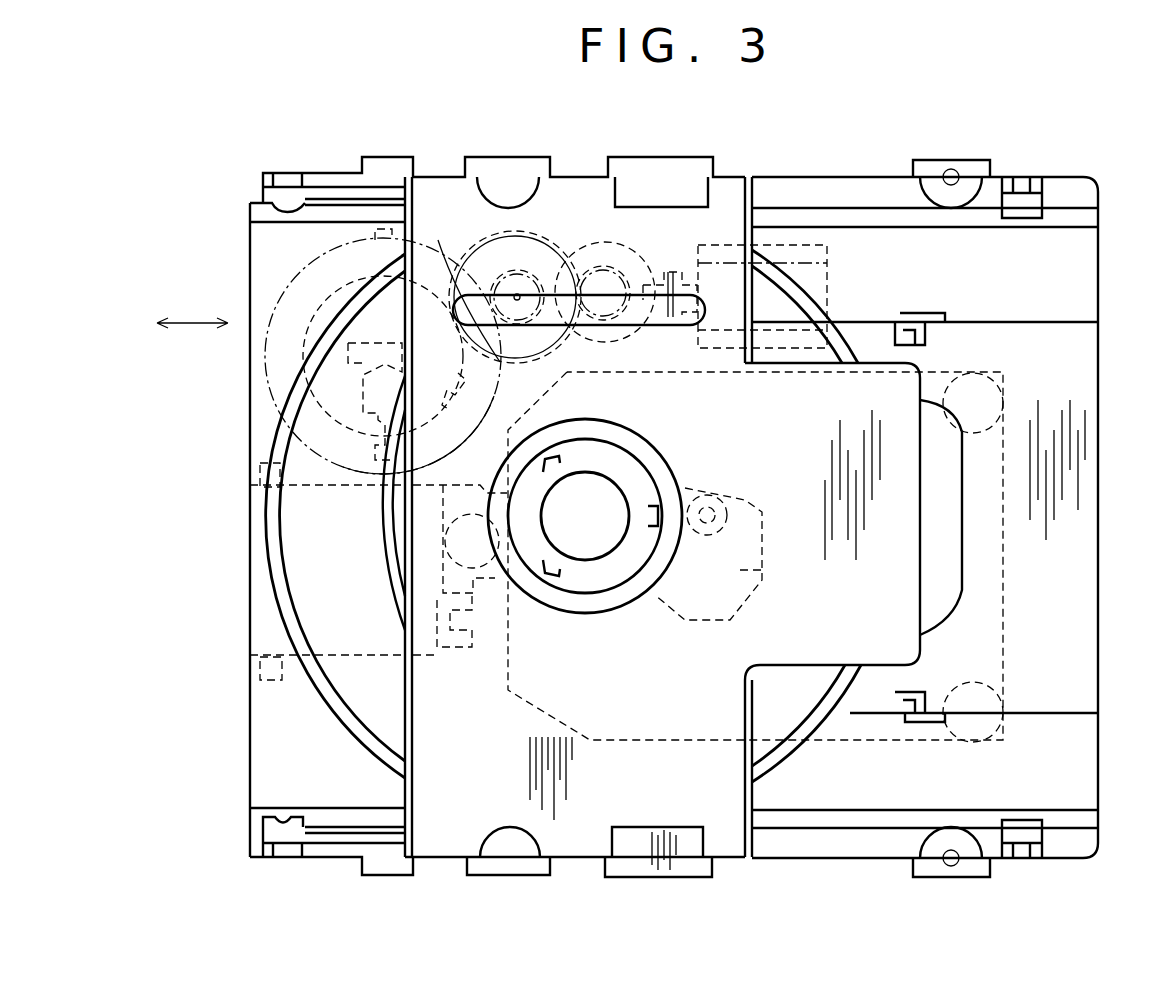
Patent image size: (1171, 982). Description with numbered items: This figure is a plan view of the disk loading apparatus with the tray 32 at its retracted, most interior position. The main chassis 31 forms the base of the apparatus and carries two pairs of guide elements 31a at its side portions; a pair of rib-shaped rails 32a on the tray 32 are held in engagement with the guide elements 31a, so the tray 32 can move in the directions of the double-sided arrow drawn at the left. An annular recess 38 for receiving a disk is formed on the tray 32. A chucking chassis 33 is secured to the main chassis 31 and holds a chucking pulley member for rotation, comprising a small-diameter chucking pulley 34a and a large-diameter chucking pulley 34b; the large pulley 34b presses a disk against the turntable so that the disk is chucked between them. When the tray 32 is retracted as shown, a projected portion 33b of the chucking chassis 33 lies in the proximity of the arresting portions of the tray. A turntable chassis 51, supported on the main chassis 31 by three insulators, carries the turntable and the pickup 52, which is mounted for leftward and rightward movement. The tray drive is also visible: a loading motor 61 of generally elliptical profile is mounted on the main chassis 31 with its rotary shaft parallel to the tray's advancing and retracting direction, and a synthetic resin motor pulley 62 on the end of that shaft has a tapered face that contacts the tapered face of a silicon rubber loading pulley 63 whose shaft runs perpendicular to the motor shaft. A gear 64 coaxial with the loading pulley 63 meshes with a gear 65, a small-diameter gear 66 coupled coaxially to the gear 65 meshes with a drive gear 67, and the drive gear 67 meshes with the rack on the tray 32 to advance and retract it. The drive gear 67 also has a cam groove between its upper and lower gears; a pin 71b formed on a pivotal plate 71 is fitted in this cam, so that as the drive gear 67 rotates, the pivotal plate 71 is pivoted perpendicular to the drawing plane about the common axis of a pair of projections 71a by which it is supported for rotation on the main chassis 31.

The main chassis 31 is at (830, 838).
The guide elements 31a is at (1022, 215).
The tray 32 is at (263, 747).
The rails 32a is at (913, 220).
The chucking chassis 33 is at (462, 190).
The projected portion 33b is at (905, 581).
The chucking pulley 34a is at (670, 457).
The chucking pulley 34b is at (387, 557).
The annular recess 38 is at (378, 712).
The turntable chassis 51 is at (985, 650).
The pickup 52 is at (763, 571).
The loading motor 61 is at (722, 245).
The motor pulley 62 is at (657, 273).
The loading pulley 63 is at (605, 265).
The gear 64 is at (593, 277).
The gear 65 is at (500, 232).
The gear 66 is at (517, 270).
The drive gear 67 is at (447, 255).
The pivotal plate 71 is at (350, 657).
The projections 71a is at (262, 468).
The pin 71b is at (395, 465).